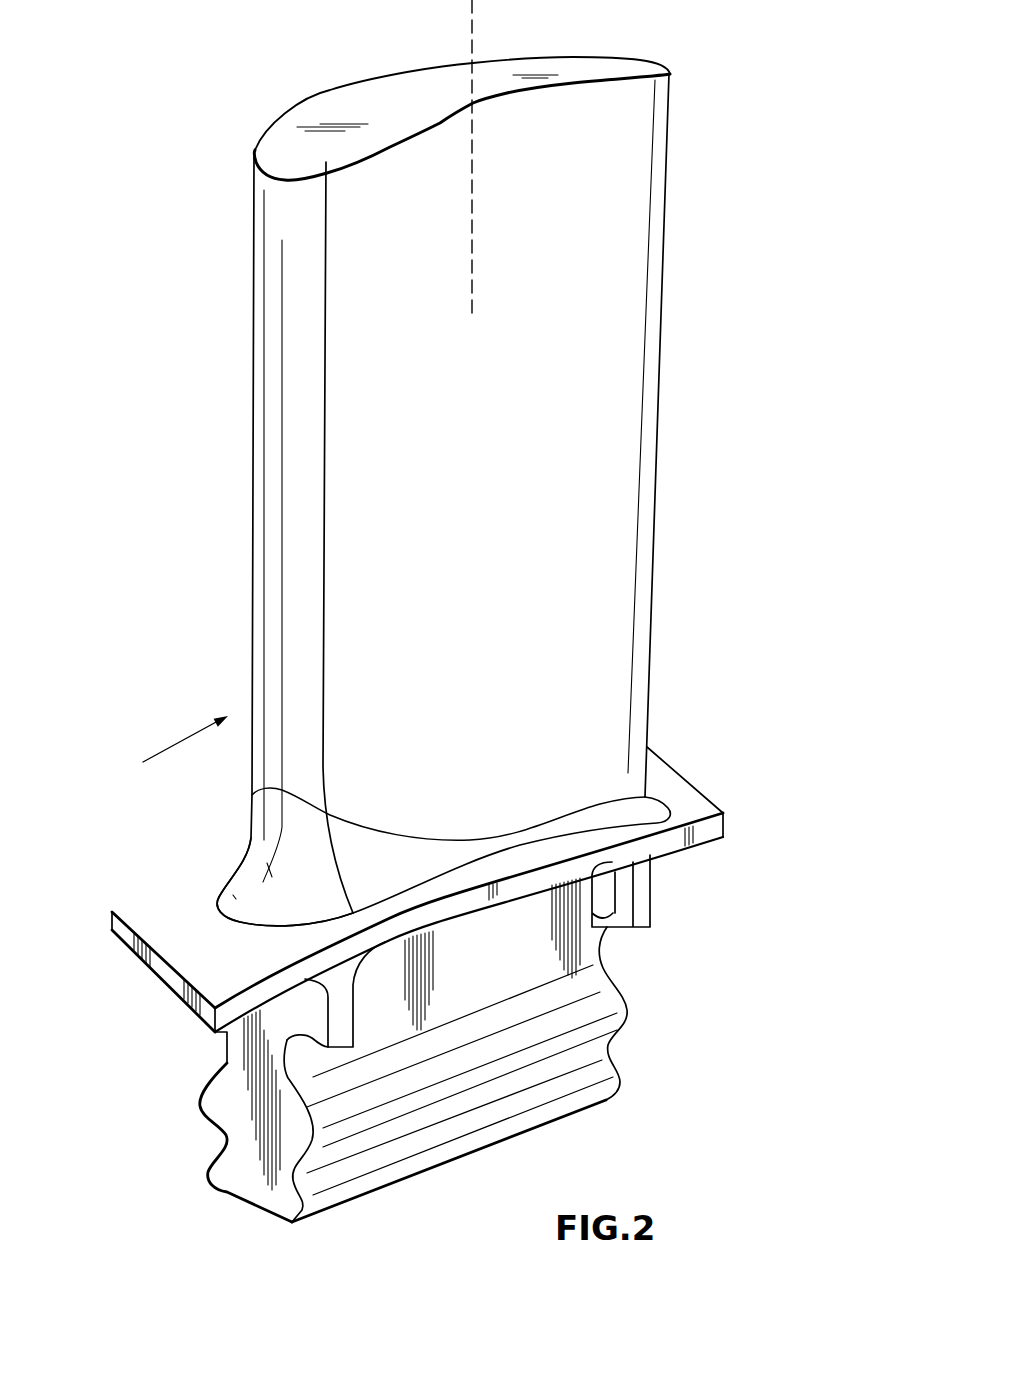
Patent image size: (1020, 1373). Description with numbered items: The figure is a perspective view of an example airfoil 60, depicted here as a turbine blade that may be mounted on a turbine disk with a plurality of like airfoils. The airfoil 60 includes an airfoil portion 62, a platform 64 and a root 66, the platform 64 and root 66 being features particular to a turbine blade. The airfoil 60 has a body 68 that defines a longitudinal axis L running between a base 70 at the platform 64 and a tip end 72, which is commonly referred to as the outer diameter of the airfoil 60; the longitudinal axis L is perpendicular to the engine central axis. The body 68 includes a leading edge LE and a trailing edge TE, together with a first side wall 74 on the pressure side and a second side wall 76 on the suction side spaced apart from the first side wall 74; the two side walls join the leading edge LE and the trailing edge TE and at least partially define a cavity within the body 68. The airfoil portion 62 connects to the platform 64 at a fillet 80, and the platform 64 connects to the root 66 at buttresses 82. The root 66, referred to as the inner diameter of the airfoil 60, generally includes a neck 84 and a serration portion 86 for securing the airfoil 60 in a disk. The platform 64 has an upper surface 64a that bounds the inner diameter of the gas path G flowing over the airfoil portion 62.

The airfoil 60 is at (423, 630).
The airfoil portion 62 is at (464, 466).
The platform 64 is at (449, 873).
The upper surface 64a is at (663, 783).
The root 66 is at (449, 1094).
The body 68 is at (613, 668).
The base 70 is at (173, 968).
The tip end 72 is at (340, 108).
The first side wall 74 is at (636, 108).
The second side wall 76 is at (573, 57).
The fillet 80 is at (270, 838).
The buttresses 82 is at (333, 1015).
The neck 84 is at (540, 920).
The serration portion 86 is at (318, 1157).
The leading edge LE is at (246, 256).
The trailing edge TE is at (678, 228).
The longitudinal axis L is at (479, 230).
The gas path G is at (178, 742).